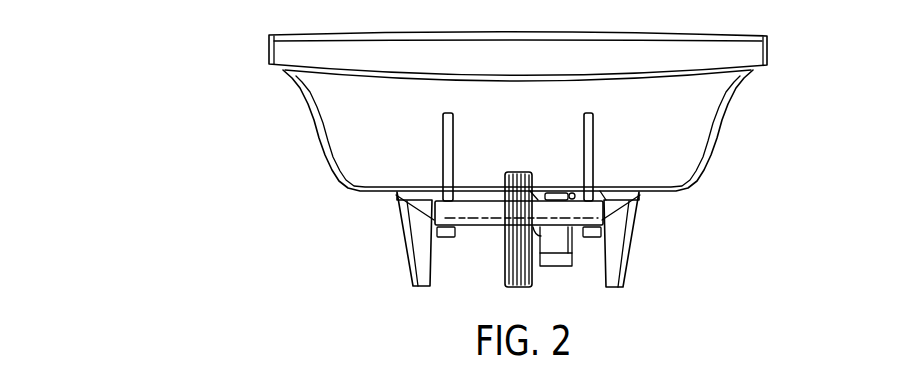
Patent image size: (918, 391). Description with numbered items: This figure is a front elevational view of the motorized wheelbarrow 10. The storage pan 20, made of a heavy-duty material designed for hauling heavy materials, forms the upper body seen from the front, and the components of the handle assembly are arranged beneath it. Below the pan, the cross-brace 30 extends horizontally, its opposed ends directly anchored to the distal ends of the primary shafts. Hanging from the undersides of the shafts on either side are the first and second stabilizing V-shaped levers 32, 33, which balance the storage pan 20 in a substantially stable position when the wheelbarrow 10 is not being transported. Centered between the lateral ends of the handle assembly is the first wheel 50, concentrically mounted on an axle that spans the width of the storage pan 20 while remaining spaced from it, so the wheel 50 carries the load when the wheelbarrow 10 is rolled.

The motorized wheel barrow 10 is at (172, 194).
The storage pan 20 is at (546, 111).
The cross-brace 30 is at (583, 189).
The first stabilizing V-shaped lever 32 is at (664, 239).
The second stabilizing V-shaped lever 33 is at (373, 264).
The first wheel 50 is at (514, 262).